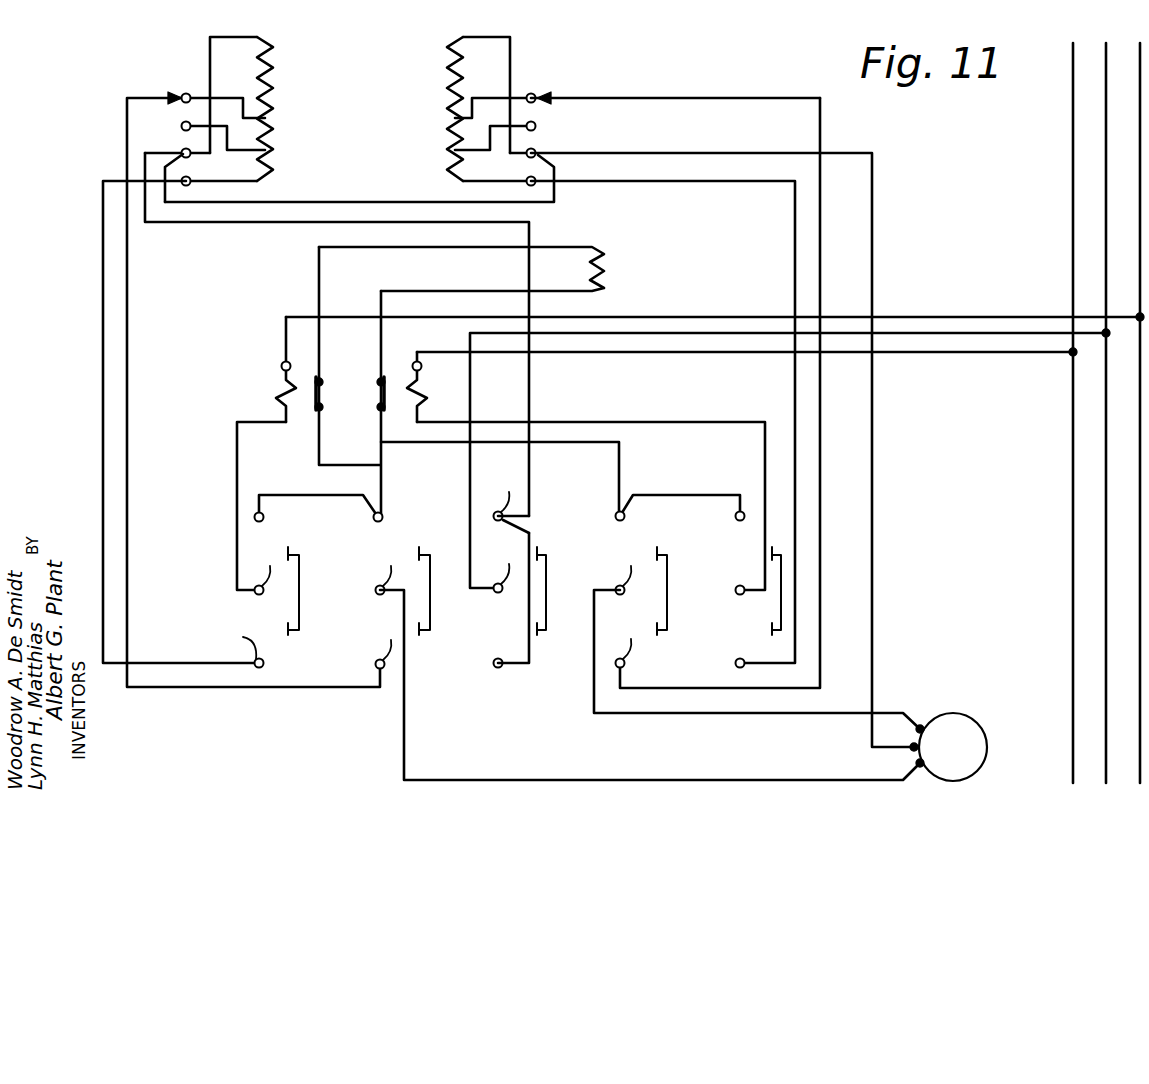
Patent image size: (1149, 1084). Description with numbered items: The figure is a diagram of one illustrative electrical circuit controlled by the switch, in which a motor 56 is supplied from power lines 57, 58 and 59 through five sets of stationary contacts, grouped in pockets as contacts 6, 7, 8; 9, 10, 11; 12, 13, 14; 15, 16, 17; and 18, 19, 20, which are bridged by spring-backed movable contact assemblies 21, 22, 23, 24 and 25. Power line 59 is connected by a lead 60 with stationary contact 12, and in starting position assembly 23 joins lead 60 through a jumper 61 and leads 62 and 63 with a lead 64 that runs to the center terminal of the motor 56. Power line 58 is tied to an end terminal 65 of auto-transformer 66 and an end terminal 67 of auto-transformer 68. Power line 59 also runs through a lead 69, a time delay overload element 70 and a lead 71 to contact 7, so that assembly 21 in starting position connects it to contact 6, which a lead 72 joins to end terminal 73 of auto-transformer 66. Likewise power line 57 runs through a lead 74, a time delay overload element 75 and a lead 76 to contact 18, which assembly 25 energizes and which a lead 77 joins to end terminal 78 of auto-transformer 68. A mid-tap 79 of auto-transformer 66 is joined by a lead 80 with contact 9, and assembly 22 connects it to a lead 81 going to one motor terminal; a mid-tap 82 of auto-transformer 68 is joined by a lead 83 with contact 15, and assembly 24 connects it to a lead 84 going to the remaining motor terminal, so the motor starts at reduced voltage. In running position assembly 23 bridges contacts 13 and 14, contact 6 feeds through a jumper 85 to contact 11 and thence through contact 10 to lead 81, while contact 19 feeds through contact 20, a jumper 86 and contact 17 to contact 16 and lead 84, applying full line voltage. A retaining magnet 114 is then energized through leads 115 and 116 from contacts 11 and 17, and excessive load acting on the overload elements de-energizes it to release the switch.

The stationary contact 6 is at (246, 644).
The stationary contact 7 is at (258, 574).
The stationary contact 8 is at (263, 516).
The stationary contact 9 is at (379, 646).
The stationary contact 10 is at (379, 574).
The stationary contact 11 is at (383, 515).
The stationary contact 12 is at (494, 666).
The stationary contact 13 is at (499, 571).
The stationary contact 14 is at (504, 505).
The stationary contact 15 is at (621, 645).
The stationary contact 16 is at (621, 572).
The stationary contact 17 is at (625, 516).
The stationary contact 18 is at (736, 664).
The stationary contact 19 is at (736, 593).
The stationary contact 20 is at (736, 517).
The movable contact assembly 21 is at (299, 555).
The movable contact assembly 22 is at (430, 592).
The movable contact assembly 23 is at (546, 561).
The movable contact assembly 24 is at (667, 567).
The movable contact assembly 25 is at (781, 612).
The motor 56 is at (938, 713).
The power line 57 is at (1073, 573).
The power line 58 is at (1106, 630).
The power line 59 is at (1140, 700).
The lead 60 is at (893, 333).
The jumper 61 is at (529, 652).
The lead 62 is at (531, 394).
The lead 63 is at (333, 202).
The lead 64 is at (872, 504).
The end terminal 65 is at (210, 58).
The auto-transformer 66 is at (290, 92).
The end terminal 67 is at (510, 62).
The auto-transformer 68 is at (432, 97).
The lead 69 is at (640, 316).
The time delay overload element 70 is at (282, 393).
The lead 71 is at (237, 486).
The lead 72 is at (103, 436).
The end terminal 73 is at (222, 178).
The lead 74 is at (904, 352).
The time delay overload element 75 is at (420, 396).
The lead 76 is at (722, 422).
The lead 77 is at (795, 268).
The end terminal 78 is at (526, 181).
The mid-tap 79 is at (186, 92).
The lead 80 is at (127, 444).
The lead 81 is at (562, 780).
The mid-tap 82 is at (548, 96).
The lead 83 is at (820, 493).
The lead 84 is at (688, 713).
The jumper 85 is at (314, 495).
The jumper 86 is at (706, 495).
The retaining magnet 114 is at (606, 266).
The lead 115 is at (383, 471).
The lead 116 is at (621, 452).